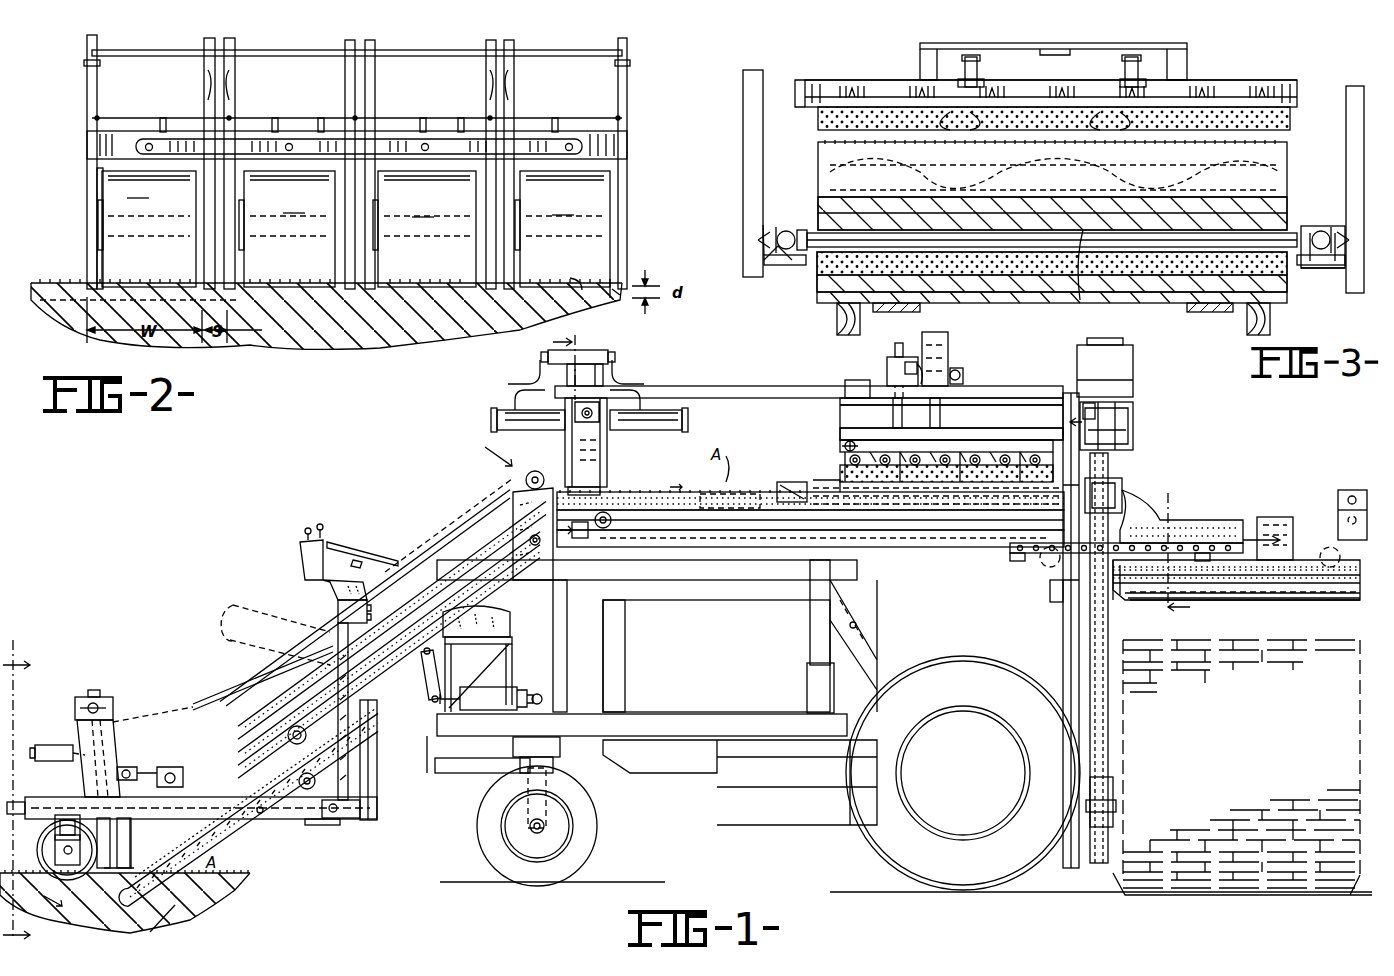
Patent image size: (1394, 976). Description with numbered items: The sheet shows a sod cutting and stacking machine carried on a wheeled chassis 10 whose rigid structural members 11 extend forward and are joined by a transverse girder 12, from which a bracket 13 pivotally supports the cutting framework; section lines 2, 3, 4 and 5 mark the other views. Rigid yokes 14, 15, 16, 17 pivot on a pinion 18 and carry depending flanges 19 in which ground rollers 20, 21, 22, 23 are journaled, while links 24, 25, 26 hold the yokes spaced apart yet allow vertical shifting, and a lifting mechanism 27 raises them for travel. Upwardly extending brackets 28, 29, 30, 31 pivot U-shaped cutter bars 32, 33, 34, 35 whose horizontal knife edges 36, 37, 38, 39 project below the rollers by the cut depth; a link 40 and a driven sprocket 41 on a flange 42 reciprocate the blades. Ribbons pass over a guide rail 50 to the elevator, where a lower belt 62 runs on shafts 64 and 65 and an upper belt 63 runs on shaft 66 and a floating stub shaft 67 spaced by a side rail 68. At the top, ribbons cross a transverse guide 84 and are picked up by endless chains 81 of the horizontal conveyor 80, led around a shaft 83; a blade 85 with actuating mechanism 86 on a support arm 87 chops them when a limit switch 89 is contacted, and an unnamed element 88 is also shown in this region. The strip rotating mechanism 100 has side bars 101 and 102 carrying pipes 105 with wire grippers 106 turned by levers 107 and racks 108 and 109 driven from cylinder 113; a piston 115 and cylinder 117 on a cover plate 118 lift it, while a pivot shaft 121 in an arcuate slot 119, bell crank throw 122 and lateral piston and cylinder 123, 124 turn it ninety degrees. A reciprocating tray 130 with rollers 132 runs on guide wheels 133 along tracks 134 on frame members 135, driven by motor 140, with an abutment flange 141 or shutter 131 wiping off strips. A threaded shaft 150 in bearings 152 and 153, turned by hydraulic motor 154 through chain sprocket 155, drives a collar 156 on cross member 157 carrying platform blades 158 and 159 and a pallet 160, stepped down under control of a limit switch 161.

In FIG. 1, the wheeled chassis 10 is at (735, 644).
In FIG. 1, the rigid structural members 11 is at (690, 716).
In FIG. 1, the transverse girder 12 is at (386, 814).
In FIG. 1, the bracket 13 is at (350, 819).
In FIG. 2, the rigid yoke 14 is at (628, 152).
In FIG. 1, the rigid yoke 14 is at (276, 820).
In FIG. 2, the rigid yoke 15 is at (460, 132).
In FIG. 2, the rigid yoke 16 is at (322, 130).
In FIG. 2, the rigid yoke 17 is at (166, 130).
In FIG. 1, the pinion 18 is at (322, 826).
In FIG. 1, the depending flanges 19 is at (55, 826).
In FIG. 2, the ground roller 20 is at (562, 230).
In FIG. 1, the ground roller 20 is at (40, 858).
In FIG. 2, the ground roller 21 is at (424, 229).
In FIG. 2, the ground roller 22 is at (287, 229).
In FIG. 2, the ground roller 23 is at (147, 229).
In FIG. 2, the link 24 is at (555, 132).
In FIG. 1, the link 24 is at (48, 762).
In FIG. 2, the link 25 is at (420, 132).
In FIG. 2, the link 26 is at (273, 132).
In FIG. 1, the lifting mechanism 27 is at (197, 708).
In FIG. 2, the upwardly extending bracket 28 is at (634, 67).
In FIG. 1, the upwardly extending bracket 28 is at (120, 748).
In FIG. 2, the upwardly extending bracket 29 is at (434, 54).
In FIG. 2, the upwardly extending bracket 30 is at (292, 52).
In FIG. 2, the upwardly extending bracket 31 is at (78, 68).
In FIG. 2, the U-shaped cutter bar 32 is at (500, 164).
In FIG. 1, the U-shaped cutter bar 32 is at (91, 696).
In FIG. 2, the U-shaped cutter bar 33 is at (360, 164).
In FIG. 2, the U-shaped cutter bar 34 is at (219, 163).
In FIG. 2, the U-shaped cutter bar 35 is at (96, 193).
In FIG. 2, the horizontal knife edge 36 is at (590, 300).
In FIG. 1, the horizontal knife edge 36 is at (150, 932).
In FIG. 2, the horizontal knife edge 37 is at (326, 314).
In FIG. 2, the horizontal knife edge 38 is at (270, 318).
In FIG. 2, the horizontal knife edge 39 is at (87, 310).
In FIG. 1, the link 40 is at (172, 912).
In FIG. 1, the driven sprocket 41 is at (255, 795).
In FIG. 1, the flange 42 is at (128, 840).
In FIG. 1, the guide rail 50 is at (228, 838).
In FIG. 1, the lower belt 62 is at (432, 738).
In FIG. 1, the upper belt 63 is at (412, 584).
In FIG. 1, the shaft 64 is at (316, 786).
In FIG. 1, the shaft 65 is at (545, 545).
In FIG. 1, the shaft 66 is at (542, 472).
In FIG. 1, the stub shaft 67 is at (287, 743).
In FIG. 1, the side rail 68 is at (492, 530).
In FIG. 3, the horizontal conveyor 80 is at (810, 180).
In FIG. 1, the horizontal conveyor 80 is at (690, 502).
In FIG. 3, the endless chains 81 is at (830, 168).
In FIG. 1, the endless chains 81 is at (746, 510).
In FIG. 1, the shaft 83 is at (608, 528).
In FIG. 1, the transverse guide 84 is at (520, 520).
In FIG. 1, the blade 85 is at (606, 482).
In FIG. 1, the actuating mechanism 86 is at (648, 395).
In FIG. 1, the support arm 87 is at (710, 384).
In FIG. 1, the shoe 88 is at (600, 491).
In FIG. 1, the limit switch 89 is at (780, 482).
In FIG. 3, the strip rotating mechanism 100 is at (1052, 95).
In FIG. 1, the strip rotating mechanism 100 is at (798, 447).
In FIG. 3, the side bar 101 is at (796, 76).
In FIG. 3, the side bar 102 is at (1298, 92).
In FIG. 3, the pipes 105 is at (1226, 90).
In FIG. 3, the wire grippers 106 is at (818, 115).
In FIG. 3, the levers 107 is at (962, 80).
In FIG. 3, the rack 108 is at (962, 79).
In FIG. 3, the rack 109 is at (1122, 63).
In FIG. 1, the hydraulic or pneumatic cylinder 113 is at (848, 442).
In FIG. 1, the piston 115 is at (942, 416).
In FIG. 1, the cylinder 117 is at (948, 348).
In FIG. 1, the cover plate 118 is at (852, 388).
In FIG. 1, the arcuate slot 119 is at (892, 400).
In FIG. 3, the pivot shaft 121 is at (1036, 58).
In FIG. 1, the bell crank throw 122 is at (891, 368).
In FIG. 1, the piston 123 is at (966, 372).
In FIG. 1, the cylinder 124 is at (916, 356).
In FIG. 3, the reciprocating tray 130 is at (1328, 236).
In FIG. 1, the reciprocating tray 130 is at (1245, 525).
In FIG. 1, the vertical shutter 131 is at (1134, 481).
In FIG. 3, the rollers 132 is at (1052, 277).
In FIG. 3, the guide wheels 133 is at (794, 230).
In FIG. 1, the guide wheels 133 is at (1046, 562).
In FIG. 3, the tracks 134 is at (782, 265).
In FIG. 1, the tracks 134 is at (985, 558).
In FIG. 3, the frame members 135 is at (743, 118).
In FIG. 1, the frame members 135 is at (1063, 414).
In FIG. 1, the reversible hydraulic motor 140 is at (836, 578).
In FIG. 3, the abutment flange 141 is at (1047, 241).
In FIG. 1, the abutment flange 141 is at (1160, 515).
In FIG. 1, the vertical threaded shaft 150 is at (1112, 470).
In FIG. 1, the upper bearing 152 is at (1122, 486).
In FIG. 1, the lower bearing 153 is at (1116, 806).
In FIG. 1, the hydraulic motor 154 is at (1133, 378).
In FIG. 1, the chain sprocket 155 is at (1133, 432).
In FIG. 1, the threaded collar 156 is at (1086, 587).
In FIG. 1, the transverse cross member 157 is at (1117, 594).
In FIG. 3, the platform blade 158 is at (920, 310).
In FIG. 1, the platform blade 158 is at (1320, 602).
In FIG. 3, the platform blade 159 is at (1187, 310).
In FIG. 1, the platform blade 159 is at (1330, 618).
In FIG. 3, the pallet 160 is at (1285, 313).
In FIG. 1, the pallet 160 is at (1257, 606).
In FIG. 1, the limit switch 161 is at (1356, 478).
In FIG. 1, the section line 2— 2 is at (16, 806).
In FIG. 1, the section line 3— 3 is at (1130, 519).
In FIG. 1, the view line 4 is at (271, 673).
In FIG. 1, the view line 5 is at (570, 435).